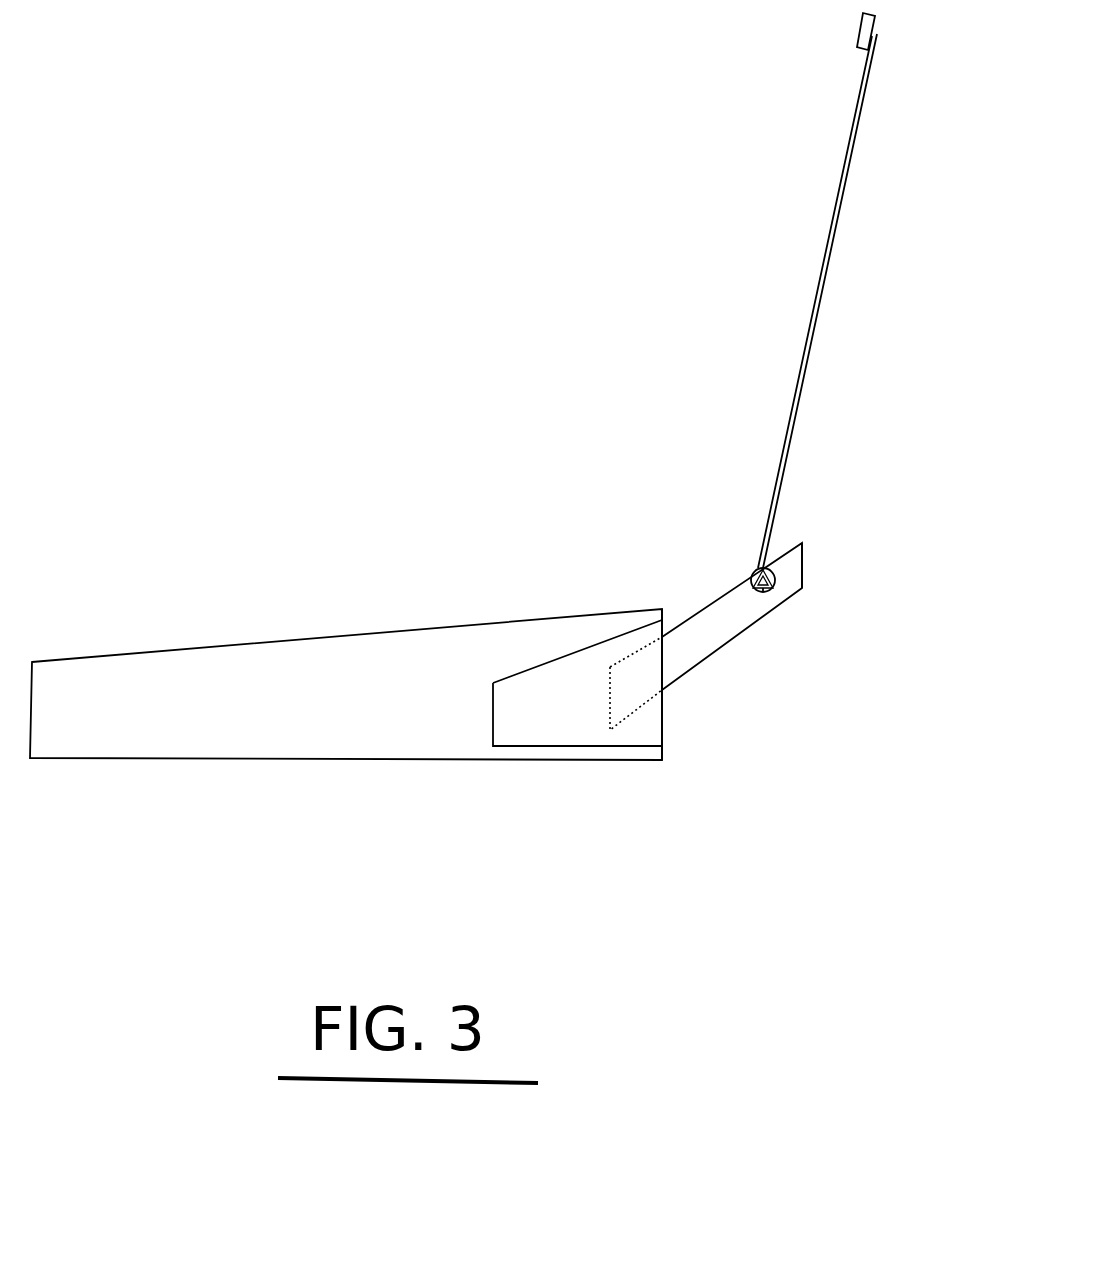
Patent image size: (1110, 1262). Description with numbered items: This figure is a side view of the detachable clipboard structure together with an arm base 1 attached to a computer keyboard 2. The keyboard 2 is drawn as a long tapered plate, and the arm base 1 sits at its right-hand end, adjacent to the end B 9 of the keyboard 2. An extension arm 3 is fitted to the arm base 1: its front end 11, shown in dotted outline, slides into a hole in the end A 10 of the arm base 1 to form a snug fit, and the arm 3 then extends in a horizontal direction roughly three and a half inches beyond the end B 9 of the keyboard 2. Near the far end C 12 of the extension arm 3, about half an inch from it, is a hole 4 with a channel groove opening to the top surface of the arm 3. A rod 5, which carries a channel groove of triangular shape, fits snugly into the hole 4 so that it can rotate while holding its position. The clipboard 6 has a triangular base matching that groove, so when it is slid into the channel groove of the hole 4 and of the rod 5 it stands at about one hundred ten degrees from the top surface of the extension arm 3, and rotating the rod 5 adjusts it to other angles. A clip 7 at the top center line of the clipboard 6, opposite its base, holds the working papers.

The arm base 1 is at (524, 723).
The computer keyboard 2 is at (118, 719).
The extension arm 3 is at (692, 637).
The hole 4 is at (776, 575).
The rod 5 is at (763, 592).
The clipboard 6 is at (821, 229).
The clip 7 is at (853, 28).
The end B 9 is at (656, 609).
The end A 10 is at (647, 723).
The front end 11 is at (619, 685).
The end C 12 is at (787, 583).